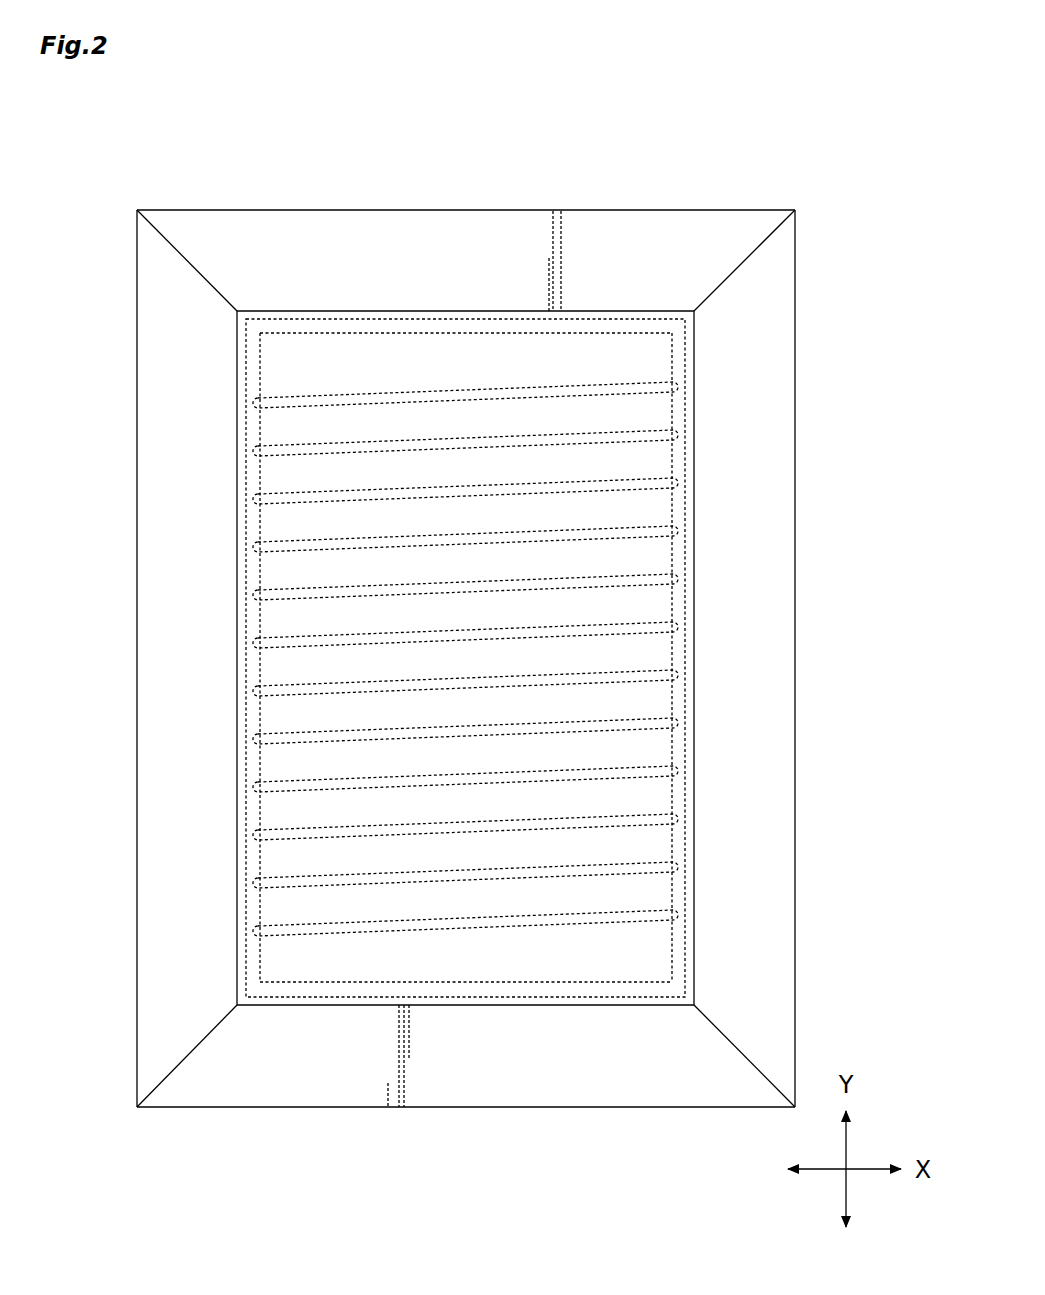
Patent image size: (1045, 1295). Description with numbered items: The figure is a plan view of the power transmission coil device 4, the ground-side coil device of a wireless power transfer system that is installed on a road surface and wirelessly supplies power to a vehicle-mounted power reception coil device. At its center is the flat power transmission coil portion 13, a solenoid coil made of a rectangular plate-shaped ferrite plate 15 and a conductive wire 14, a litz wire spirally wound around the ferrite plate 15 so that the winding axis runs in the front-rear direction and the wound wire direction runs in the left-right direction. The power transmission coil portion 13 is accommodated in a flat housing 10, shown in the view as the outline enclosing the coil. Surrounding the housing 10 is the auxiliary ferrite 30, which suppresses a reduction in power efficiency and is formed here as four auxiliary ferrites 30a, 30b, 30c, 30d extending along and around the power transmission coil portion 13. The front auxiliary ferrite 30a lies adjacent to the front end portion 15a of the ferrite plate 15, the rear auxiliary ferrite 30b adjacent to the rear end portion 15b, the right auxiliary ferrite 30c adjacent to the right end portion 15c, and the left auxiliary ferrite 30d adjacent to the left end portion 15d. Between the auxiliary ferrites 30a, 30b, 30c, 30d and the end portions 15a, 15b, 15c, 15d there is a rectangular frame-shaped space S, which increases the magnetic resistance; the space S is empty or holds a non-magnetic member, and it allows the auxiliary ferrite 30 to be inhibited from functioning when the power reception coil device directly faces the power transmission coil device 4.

The power transmission coil device 4 is at (556, 126).
The auxiliary ferrite 30 is at (605, 208).
The front auxiliary ferrite 30a is at (360, 248).
The rear auxiliary ferrite 30b is at (460, 1090).
The right auxiliary ferrite 30c is at (783, 683).
The left auxiliary ferrite 30d is at (148, 672).
The housing 10 is at (651, 312).
The power transmission coil portion 13 is at (313, 1007).
The conductive wire 14 is at (632, 426).
The ferrite plate 15 is at (293, 330).
The front end portion 15a is at (415, 333).
The rear end portion 15b is at (605, 992).
The right end portion 15c is at (672, 598).
The left end portion 15d is at (258, 522).
The space S is at (505, 330).